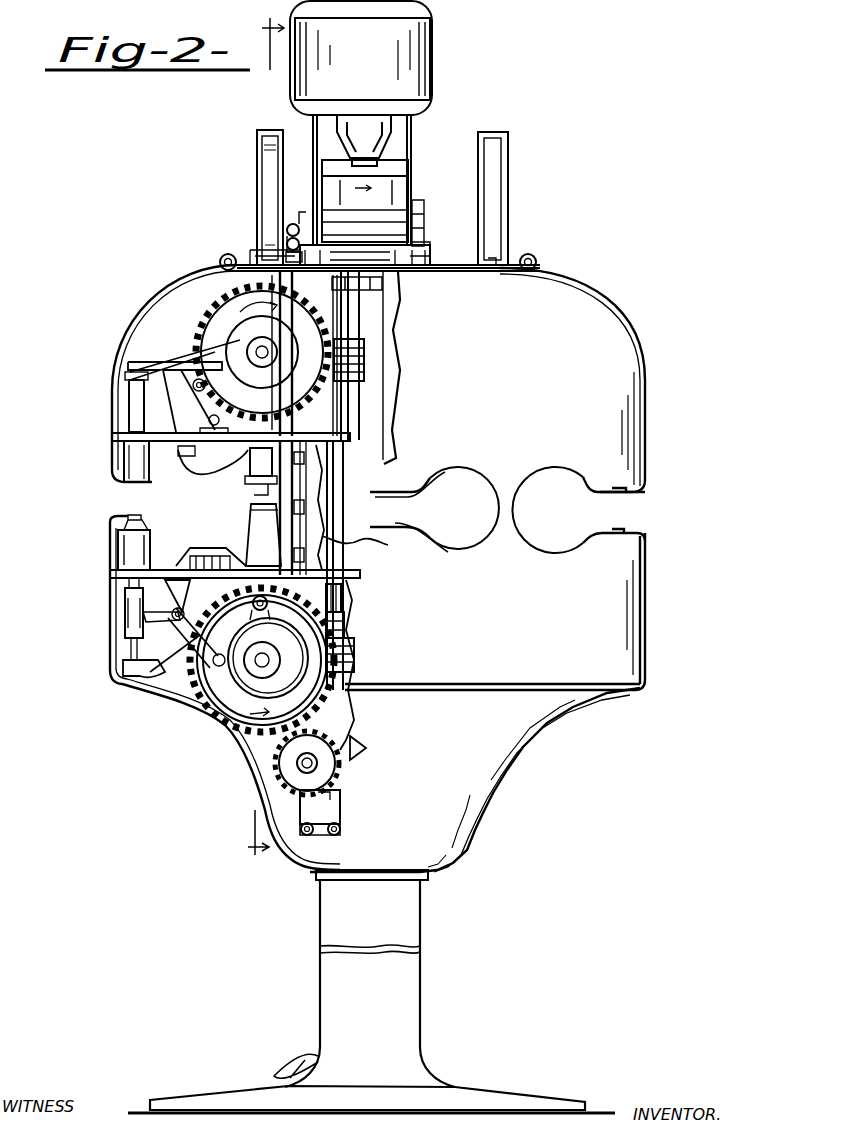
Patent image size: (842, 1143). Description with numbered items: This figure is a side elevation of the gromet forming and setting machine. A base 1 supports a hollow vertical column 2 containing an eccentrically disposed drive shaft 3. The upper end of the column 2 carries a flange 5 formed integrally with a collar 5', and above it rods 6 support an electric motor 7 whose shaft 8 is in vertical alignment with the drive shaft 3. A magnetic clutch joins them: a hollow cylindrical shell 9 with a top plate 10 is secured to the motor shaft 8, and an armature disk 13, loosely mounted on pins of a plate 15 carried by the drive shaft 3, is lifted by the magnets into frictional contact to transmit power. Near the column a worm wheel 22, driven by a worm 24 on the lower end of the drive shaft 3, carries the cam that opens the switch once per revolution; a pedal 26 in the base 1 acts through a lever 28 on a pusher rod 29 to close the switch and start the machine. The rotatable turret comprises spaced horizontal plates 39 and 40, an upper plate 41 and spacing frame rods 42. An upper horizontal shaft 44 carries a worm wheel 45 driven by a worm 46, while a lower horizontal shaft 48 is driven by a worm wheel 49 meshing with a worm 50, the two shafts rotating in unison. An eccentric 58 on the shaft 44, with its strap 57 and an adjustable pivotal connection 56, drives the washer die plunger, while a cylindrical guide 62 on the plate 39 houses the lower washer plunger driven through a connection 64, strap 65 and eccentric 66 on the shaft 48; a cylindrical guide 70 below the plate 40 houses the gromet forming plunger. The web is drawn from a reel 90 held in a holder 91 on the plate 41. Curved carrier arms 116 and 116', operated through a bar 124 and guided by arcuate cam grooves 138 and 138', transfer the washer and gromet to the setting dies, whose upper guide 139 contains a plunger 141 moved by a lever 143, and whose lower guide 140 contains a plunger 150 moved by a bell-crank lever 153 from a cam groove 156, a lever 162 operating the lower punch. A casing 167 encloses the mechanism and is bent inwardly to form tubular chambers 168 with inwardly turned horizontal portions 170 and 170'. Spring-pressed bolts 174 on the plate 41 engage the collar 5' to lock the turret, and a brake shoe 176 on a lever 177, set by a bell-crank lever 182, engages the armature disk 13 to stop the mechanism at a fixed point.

The base 1 is at (398, 1046).
The column 2 is at (372, 327).
The drive shaft 3 is at (255, 436).
The flange 5 is at (382, 275).
The collar 5' is at (368, 287).
The rods 6 is at (412, 129).
The electric motor 7 is at (361, 58).
The motor shaft 8 is at (363, 152).
The shell 9 is at (378, 198).
The top plate 10 is at (396, 166).
The armature disk 13 is at (426, 220).
The plate 15 is at (423, 250).
The worm wheel 22 is at (288, 770).
The worm 24 is at (352, 769).
The pedal 26 is at (280, 1057).
The lever 28 is at (318, 840).
The pusher rod 29 is at (314, 814).
The lower turret plate 39 is at (123, 575).
The central turret plate 40 is at (126, 437).
The upper turret plate 41 is at (170, 272).
The spacing frame rods 42 is at (280, 353).
The horizontal shaft 44 is at (258, 352).
The worm wheel 45 is at (202, 313).
The worm 46 is at (352, 361).
The lower horizontal shaft 48 is at (247, 696).
The worm wheel 49 is at (232, 672).
The worm 50 is at (357, 656).
The adjustable pivotal connection 56 is at (206, 419).
The strap 57 is at (212, 352).
The eccentric 58 is at (235, 345).
The cylindrical guide 62 is at (262, 542).
The adjustable pivotal connection 64 is at (300, 600).
The strap 65 is at (268, 606).
The eccentric 66 is at (285, 652).
The cylindrical guide 70 is at (252, 470).
The reel 90 is at (266, 166).
The holder 91 is at (491, 141).
The carrier arm 116 is at (243, 482).
The carrier arm 116' is at (239, 535).
The bar 124 is at (336, 546).
The cam groove 138 is at (198, 469).
The cam groove 138' is at (197, 544).
The upper setting die guide 139 is at (132, 463).
The lower setting die guide 140 is at (132, 553).
The plunger 141 is at (128, 401).
The lever 143 is at (175, 397).
The plunger 150 is at (148, 619).
The bell-crank lever 153 is at (212, 693).
The cam groove 156 is at (240, 748).
The lever 162 is at (168, 615).
The casing 167 is at (600, 671).
The tubular chambers 168 is at (503, 510).
The inwardly turned horizontal portion 170 is at (534, 474).
The inwardly turned horizontal portion 170' is at (533, 544).
The bolts 174 is at (536, 263).
The brake shoe 176 is at (291, 224).
The lever 177 is at (290, 242).
The bell-crank lever 182 is at (226, 283).